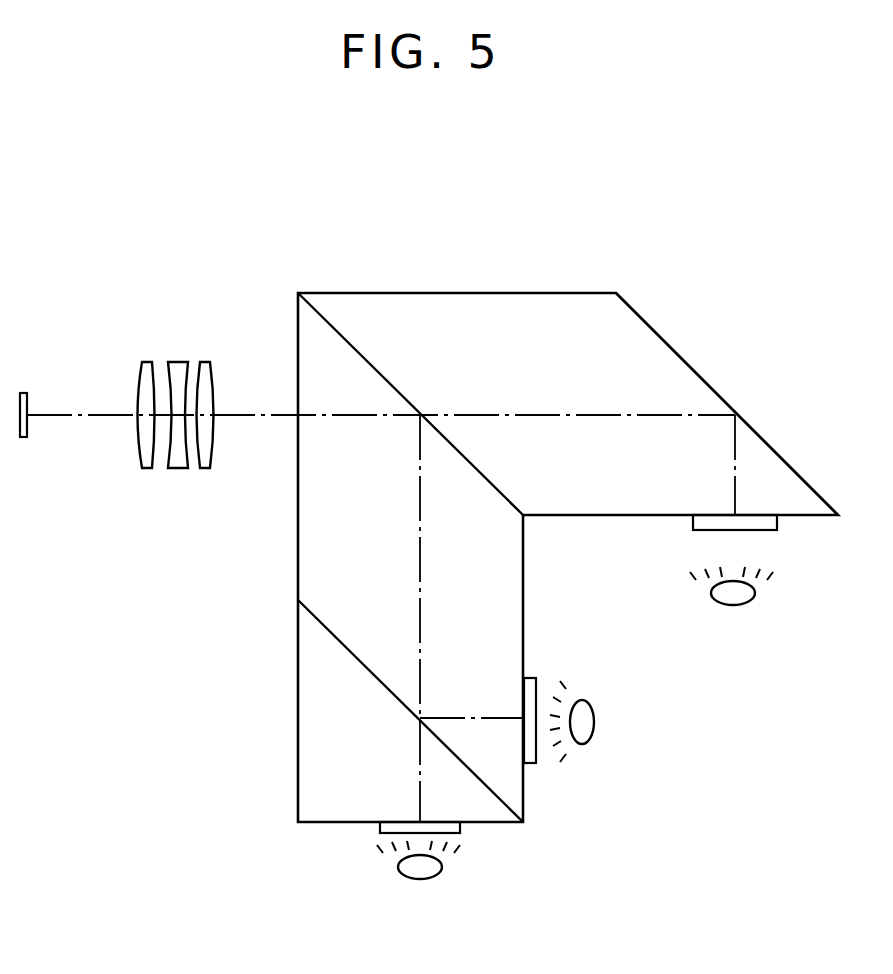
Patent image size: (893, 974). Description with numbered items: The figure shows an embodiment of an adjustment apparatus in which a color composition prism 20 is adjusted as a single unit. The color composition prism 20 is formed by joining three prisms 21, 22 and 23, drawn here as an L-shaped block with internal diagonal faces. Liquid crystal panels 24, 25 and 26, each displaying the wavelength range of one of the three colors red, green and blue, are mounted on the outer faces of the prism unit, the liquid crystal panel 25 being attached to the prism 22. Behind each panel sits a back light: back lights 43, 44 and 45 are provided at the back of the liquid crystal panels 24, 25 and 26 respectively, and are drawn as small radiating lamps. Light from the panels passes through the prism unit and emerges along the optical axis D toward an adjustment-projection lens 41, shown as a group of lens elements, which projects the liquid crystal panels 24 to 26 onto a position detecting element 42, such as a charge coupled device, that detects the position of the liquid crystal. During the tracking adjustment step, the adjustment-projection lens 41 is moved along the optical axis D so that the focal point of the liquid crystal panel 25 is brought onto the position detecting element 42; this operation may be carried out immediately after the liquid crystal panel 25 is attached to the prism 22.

The color composition prism 20 is at (435, 255).
The prism 21 is at (658, 360).
The prism 22 is at (297, 325).
The prism 23 is at (303, 708).
The liquid crystal panel 24 is at (777, 523).
The liquid crystal panel 25 is at (532, 677).
The liquid crystal panel 26 is at (377, 827).
The adjustment-projection lens 41 is at (232, 356).
The position detecting element 42 is at (27, 392).
The back light 43 is at (745, 605).
The back light 44 is at (595, 715).
The back light 45 is at (420, 880).
The optical axis D is at (270, 412).